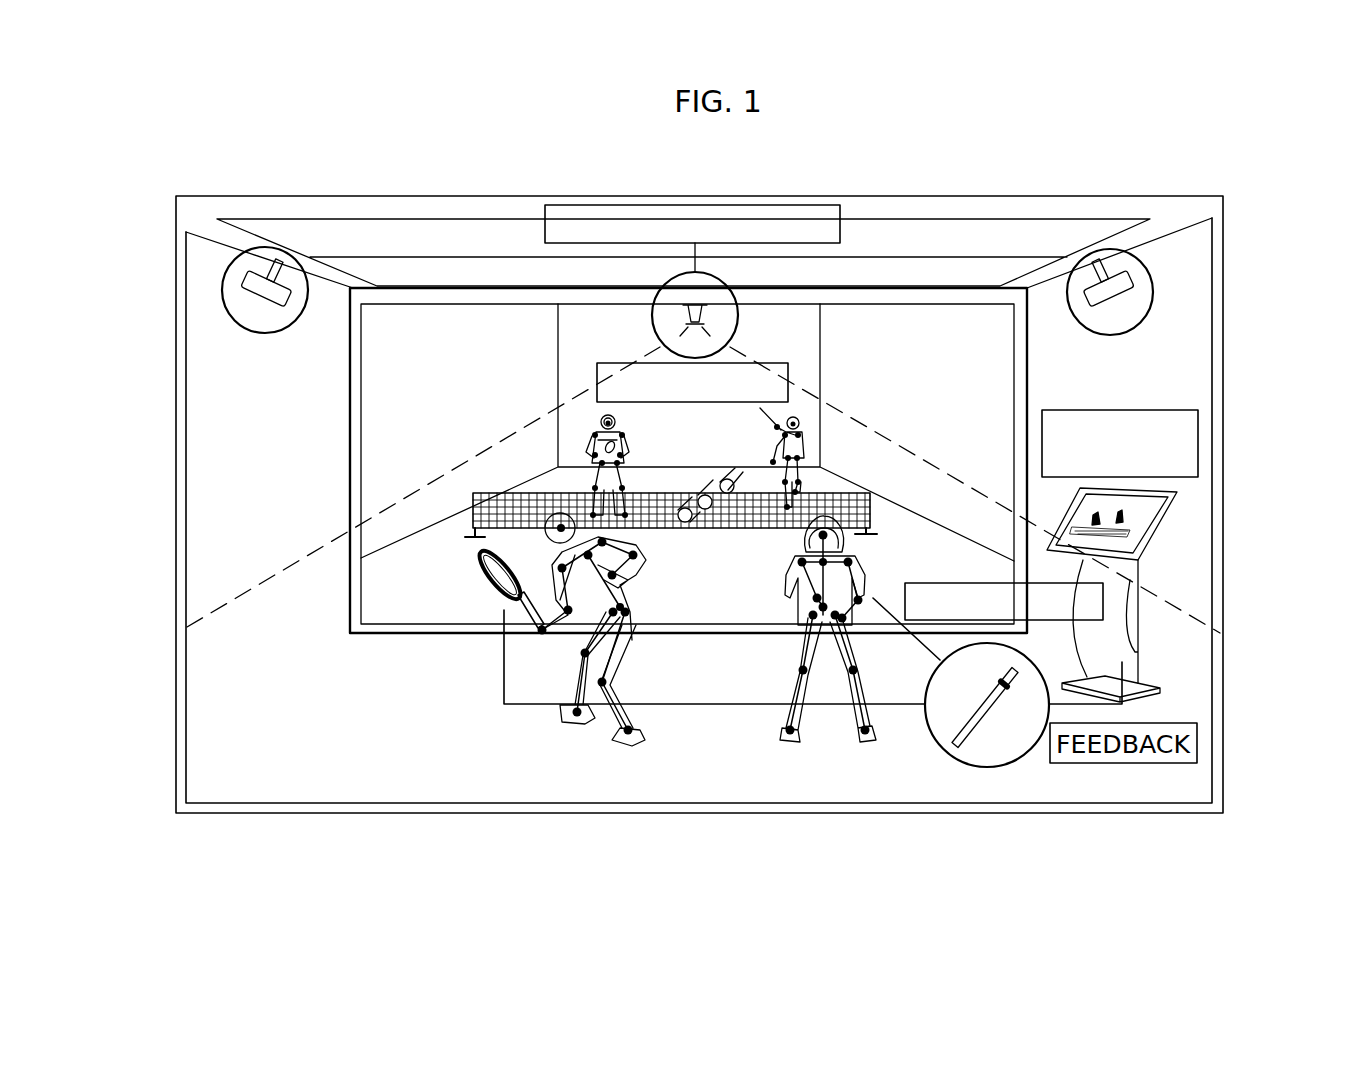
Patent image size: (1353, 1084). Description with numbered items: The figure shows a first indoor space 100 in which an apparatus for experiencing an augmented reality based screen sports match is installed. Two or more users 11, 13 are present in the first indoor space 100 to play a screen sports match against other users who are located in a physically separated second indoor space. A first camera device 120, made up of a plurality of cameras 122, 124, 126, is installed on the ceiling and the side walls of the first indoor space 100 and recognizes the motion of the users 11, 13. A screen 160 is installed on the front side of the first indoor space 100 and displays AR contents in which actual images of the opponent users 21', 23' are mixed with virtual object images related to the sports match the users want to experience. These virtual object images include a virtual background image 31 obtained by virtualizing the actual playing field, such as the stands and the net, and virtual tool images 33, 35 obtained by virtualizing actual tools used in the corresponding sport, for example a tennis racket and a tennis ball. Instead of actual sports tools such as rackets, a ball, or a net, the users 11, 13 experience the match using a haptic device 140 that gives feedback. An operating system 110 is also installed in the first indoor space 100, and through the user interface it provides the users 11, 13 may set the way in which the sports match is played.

The first indoor space 100 is at (328, 803).
The operating system 110 is at (1137, 562).
The first camera device 120 is at (703, 527).
The camera 122 is at (267, 248).
The camera 124 is at (653, 333).
The camera 126 is at (1110, 248).
The haptic device 140 is at (983, 767).
The screen 160 is at (420, 335).
The user 11 is at (577, 583).
The user 13 is at (843, 663).
The actual image of opponent user 21' is at (383, 473).
The actual image of opponent user 23' is at (1014, 370).
The virtual background image 31 is at (475, 505).
The virtual tool image 33 is at (690, 527).
The virtual tool image 35 is at (603, 420).